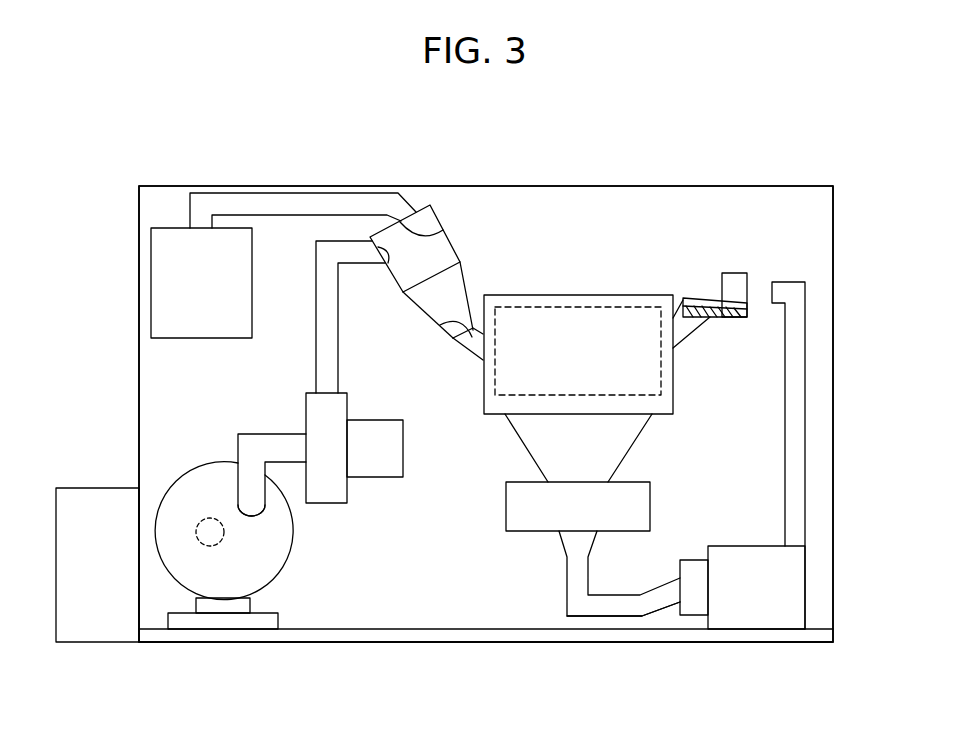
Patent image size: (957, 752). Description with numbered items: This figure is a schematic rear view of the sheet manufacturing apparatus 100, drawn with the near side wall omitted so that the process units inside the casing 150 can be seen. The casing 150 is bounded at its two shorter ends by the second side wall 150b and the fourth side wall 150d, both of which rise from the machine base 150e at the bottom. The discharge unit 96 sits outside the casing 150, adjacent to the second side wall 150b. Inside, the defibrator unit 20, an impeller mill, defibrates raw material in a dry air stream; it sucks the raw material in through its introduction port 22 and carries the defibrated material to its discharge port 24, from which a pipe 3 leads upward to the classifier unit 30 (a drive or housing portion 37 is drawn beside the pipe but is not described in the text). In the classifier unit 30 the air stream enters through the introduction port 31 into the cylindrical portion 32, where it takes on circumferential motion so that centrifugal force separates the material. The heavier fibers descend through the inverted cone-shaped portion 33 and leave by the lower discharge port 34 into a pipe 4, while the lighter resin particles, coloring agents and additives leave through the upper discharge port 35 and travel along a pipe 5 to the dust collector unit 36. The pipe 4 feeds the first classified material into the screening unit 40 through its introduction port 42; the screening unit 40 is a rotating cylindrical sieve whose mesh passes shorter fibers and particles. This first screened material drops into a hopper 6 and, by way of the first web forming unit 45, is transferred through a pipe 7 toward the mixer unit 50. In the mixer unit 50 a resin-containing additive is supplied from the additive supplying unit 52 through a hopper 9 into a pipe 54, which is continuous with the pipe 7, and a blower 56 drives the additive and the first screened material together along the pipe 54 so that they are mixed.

The sheet manufacturing apparatus 100 is at (757, 158).
The casing 150 is at (838, 220).
The second side wall 150b is at (138, 228).
The fourth side wall 150d is at (835, 298).
The machine base 150e is at (438, 633).
The discharge unit 96 is at (84, 478).
The dust collector unit 36 is at (162, 292).
The pipe 5 is at (337, 202).
The classifier unit 30 is at (437, 286).
The cylindrical portion 32 is at (458, 243).
The upper discharge port 35 is at (446, 229).
The introduction port 31 is at (385, 268).
The inverted cone-shaped portion 33 is at (462, 275).
The lower discharge port 34 is at (440, 325).
The pipe 4 is at (470, 345).
The pipe 3 is at (282, 442).
The pump unit 37 is at (337, 483).
The defibrator unit 20 is at (168, 588).
The introduction port 22 is at (200, 518).
The discharge port 24 is at (262, 507).
The screening unit 40 is at (625, 288).
The introduction port 42 is at (485, 352).
The hopper 9 is at (690, 338).
The additive supplying unit 52 is at (735, 278).
The hopper 6 is at (617, 442).
The first web forming unit 45 is at (510, 468).
The pipe 7 is at (577, 578).
The blower 56 is at (695, 603).
The mixer unit 50 is at (737, 537).
The pipe 54 is at (797, 428).